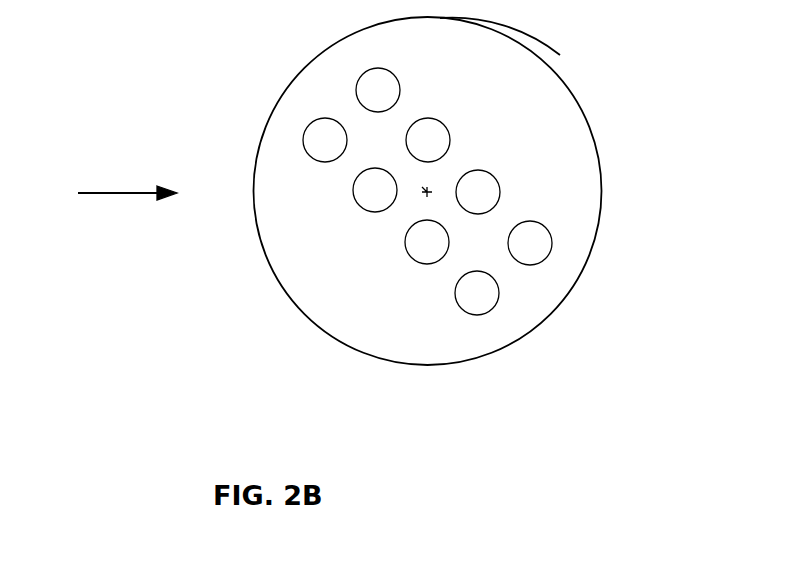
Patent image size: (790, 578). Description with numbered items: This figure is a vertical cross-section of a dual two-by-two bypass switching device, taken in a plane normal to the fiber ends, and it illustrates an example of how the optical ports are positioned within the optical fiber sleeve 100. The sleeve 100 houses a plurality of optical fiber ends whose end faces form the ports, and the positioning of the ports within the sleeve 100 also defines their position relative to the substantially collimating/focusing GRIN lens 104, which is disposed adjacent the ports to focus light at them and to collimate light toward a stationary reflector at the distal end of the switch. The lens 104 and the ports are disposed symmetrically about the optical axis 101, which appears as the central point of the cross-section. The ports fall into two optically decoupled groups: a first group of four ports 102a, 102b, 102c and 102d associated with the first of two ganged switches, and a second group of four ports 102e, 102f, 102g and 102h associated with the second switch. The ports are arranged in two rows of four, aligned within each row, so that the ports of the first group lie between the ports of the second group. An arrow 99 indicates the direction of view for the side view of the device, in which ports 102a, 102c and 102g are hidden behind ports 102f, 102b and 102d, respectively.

The arrow 99 is at (132, 193).
The optical fiber sleeve 100 is at (560, 307).
The optical axis 101 is at (422, 187).
The collimating/focusing lens 104 is at (535, 53).
The port 102a is at (432, 133).
The port 102b is at (365, 200).
The port 102c is at (482, 182).
The port 102d is at (423, 253).
The port 102e is at (385, 87).
The port 102f is at (323, 143).
The port 102g is at (530, 238).
The port 102h is at (468, 293).